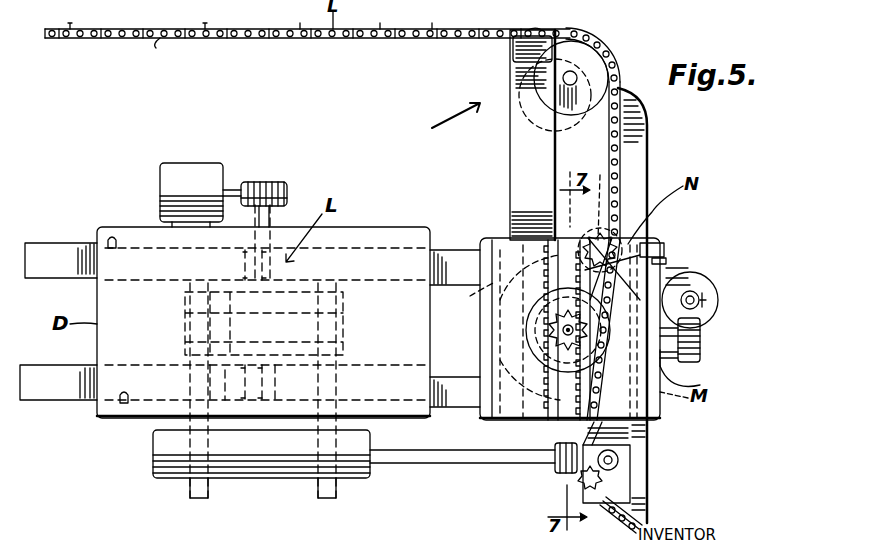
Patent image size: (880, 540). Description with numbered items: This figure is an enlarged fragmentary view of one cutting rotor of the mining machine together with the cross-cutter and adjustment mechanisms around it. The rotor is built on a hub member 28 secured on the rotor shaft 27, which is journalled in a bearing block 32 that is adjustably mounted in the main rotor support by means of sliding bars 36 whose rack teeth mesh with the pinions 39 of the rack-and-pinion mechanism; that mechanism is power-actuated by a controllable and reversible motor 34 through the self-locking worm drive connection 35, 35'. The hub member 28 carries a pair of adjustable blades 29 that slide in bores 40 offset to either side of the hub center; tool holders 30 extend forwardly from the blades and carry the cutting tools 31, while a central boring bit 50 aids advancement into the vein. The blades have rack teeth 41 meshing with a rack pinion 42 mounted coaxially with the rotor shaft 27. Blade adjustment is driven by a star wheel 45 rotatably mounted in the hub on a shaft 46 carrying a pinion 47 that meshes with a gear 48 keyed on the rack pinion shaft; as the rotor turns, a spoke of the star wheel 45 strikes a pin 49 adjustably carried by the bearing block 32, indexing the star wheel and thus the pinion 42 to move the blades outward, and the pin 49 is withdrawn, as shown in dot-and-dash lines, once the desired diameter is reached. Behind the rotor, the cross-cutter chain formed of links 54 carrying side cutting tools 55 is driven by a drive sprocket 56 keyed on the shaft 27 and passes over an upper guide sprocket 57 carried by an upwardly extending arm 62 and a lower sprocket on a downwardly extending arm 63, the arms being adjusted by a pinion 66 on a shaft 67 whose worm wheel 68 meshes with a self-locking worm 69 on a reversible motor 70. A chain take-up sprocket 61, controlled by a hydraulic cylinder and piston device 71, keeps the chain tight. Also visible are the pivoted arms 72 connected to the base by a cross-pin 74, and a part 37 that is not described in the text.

The links 54 is at (205, 30).
The side cutting tools 55 is at (184, 38).
The cutting tools 31 is at (523, 30).
The tool holders 30 is at (532, 30).
The central boring bits 50 is at (584, 4).
The upper guide sprockets 57 is at (595, 63).
The upwardly extending arms 62 is at (647, 132).
The star wheel 45 is at (630, 238).
The pinion 47 is at (597, 195).
The rack teeth 41 is at (553, 237).
The bores 40 is at (520, 236).
The hub member 28 is at (490, 238).
The adjustable arms or blades 29 is at (510, 156).
The motor 34 is at (212, 164).
The worm drive connection 35 is at (270, 189).
The worm drive connection 35' is at (309, 187).
The sliding bars 36 is at (48, 243).
The rail bolt 37 is at (112, 240).
The pinions 39 is at (245, 262).
The cross-pin 74 is at (343, 332).
The bearing supports or blocks 32 is at (503, 327).
The gear 48 is at (500, 333).
The rotor shafts 27 is at (526, 350).
The drive sprockets 56 is at (522, 430).
The pinion 42 is at (552, 428).
The chain take-up sprocket 61 is at (632, 444).
The downwardly extending arms 63 is at (640, 515).
The pinion 66 is at (660, 368).
The shafts 67 is at (688, 372).
The worm wheels 68 is at (700, 340).
The worms 69 is at (706, 302).
The controllable and reversible motors 70 is at (712, 290).
The shaft 46 is at (682, 270).
The pin 49 is at (640, 248).
The hydraulic cylinder and piston devices 71 is at (262, 478).
The arms 72 is at (196, 498).